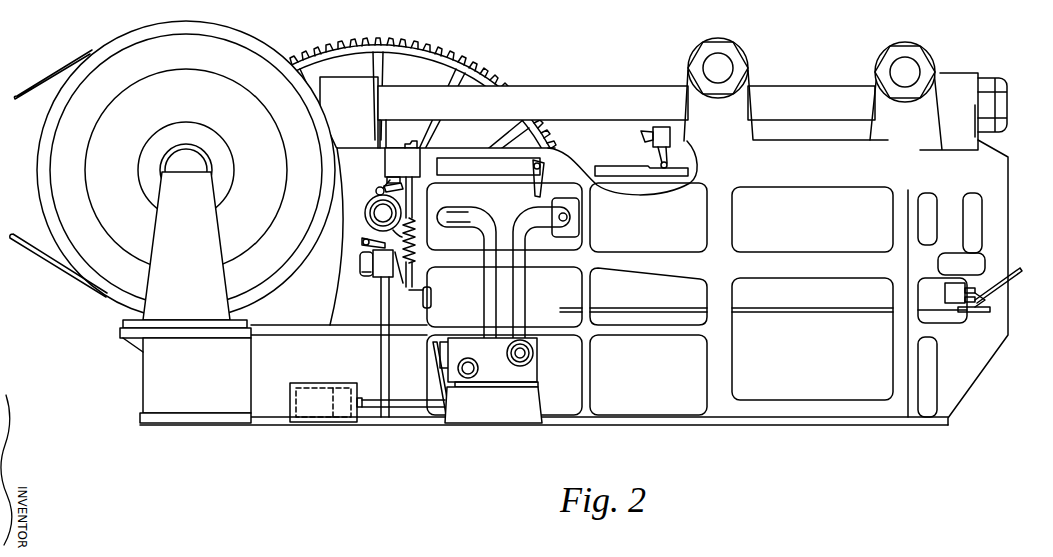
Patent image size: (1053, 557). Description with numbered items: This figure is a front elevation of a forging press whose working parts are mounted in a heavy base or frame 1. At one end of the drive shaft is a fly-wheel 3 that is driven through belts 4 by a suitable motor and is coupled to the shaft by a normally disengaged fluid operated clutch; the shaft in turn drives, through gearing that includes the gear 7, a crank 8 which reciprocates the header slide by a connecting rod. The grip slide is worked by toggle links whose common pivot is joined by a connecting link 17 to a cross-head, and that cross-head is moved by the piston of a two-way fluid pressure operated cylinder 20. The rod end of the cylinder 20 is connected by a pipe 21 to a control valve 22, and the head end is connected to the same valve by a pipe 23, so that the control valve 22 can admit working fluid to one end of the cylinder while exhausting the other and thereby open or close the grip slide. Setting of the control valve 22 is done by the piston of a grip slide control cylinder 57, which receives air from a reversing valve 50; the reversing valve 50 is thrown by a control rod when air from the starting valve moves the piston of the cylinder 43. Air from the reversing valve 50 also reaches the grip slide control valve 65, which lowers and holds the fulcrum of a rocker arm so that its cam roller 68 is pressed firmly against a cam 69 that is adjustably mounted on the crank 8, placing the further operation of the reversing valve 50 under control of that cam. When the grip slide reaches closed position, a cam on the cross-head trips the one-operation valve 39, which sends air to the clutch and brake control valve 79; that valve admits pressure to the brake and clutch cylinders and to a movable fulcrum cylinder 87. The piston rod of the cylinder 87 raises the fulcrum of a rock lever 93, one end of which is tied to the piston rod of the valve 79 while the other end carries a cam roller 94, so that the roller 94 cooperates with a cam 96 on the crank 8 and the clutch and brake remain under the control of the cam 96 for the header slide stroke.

The frame 1 is at (815, 383).
The fly-wheel 3 is at (120, 277).
The belts 4 is at (28, 255).
The gear 7 is at (466, 66).
The crank 8 is at (368, 232).
The connecting link 17 is at (615, 175).
The fluid pressure operated cylinder 20 is at (468, 237).
The pipe 21 is at (522, 291).
The control valve 22 is at (527, 375).
The pipe 23 is at (485, 285).
The one-operation valve 39 is at (660, 127).
The cylinder 43 is at (418, 145).
The reversing valve 50 is at (985, 301).
The grip slide control cylinder 57 is at (322, 383).
The grip slide control valve 65 is at (394, 153).
The cam roller 68 is at (383, 187).
The cam 69 is at (380, 196).
The clutch and brake control valve 79 is at (364, 272).
The movable fulcrum cylinder 87 is at (380, 265).
The rock lever 93 is at (362, 265).
The cam roller 94 is at (402, 265).
The cam 96 is at (363, 212).